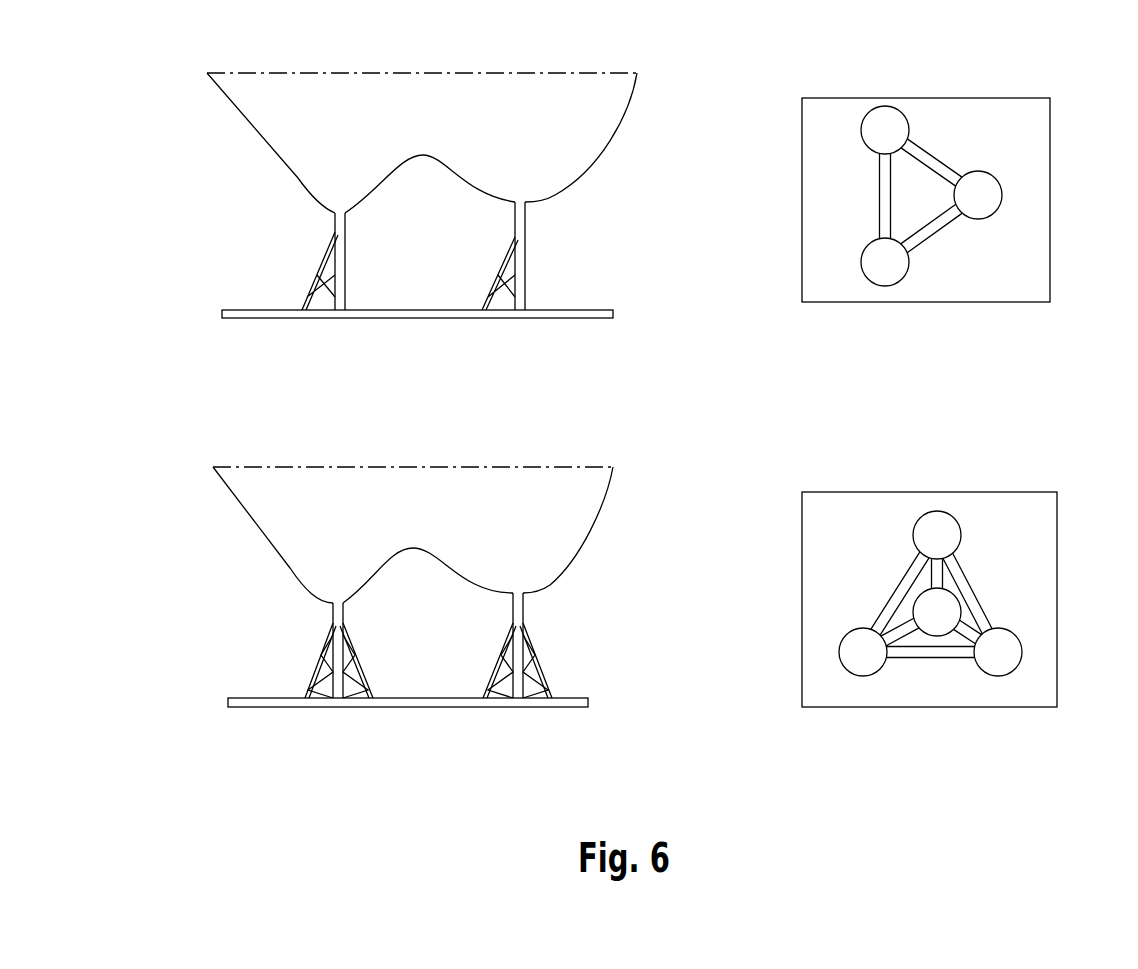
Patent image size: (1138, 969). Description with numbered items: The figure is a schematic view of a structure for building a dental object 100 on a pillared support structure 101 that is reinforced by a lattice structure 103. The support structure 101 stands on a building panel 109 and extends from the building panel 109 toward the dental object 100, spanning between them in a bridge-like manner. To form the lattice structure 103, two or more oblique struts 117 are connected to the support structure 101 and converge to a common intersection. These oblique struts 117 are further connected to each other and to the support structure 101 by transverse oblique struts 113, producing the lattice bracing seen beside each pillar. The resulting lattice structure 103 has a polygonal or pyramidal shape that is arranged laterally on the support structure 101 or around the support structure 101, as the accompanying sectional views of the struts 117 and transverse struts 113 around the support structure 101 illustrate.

The dental object 100 is at (552, 152).
The pillared support structure 101 is at (337, 225).
The lattice structure 103 is at (297, 297).
The building panel 109 is at (573, 318).
The transverse oblique struts 113 is at (323, 287).
The oblique struts 117 is at (308, 318).